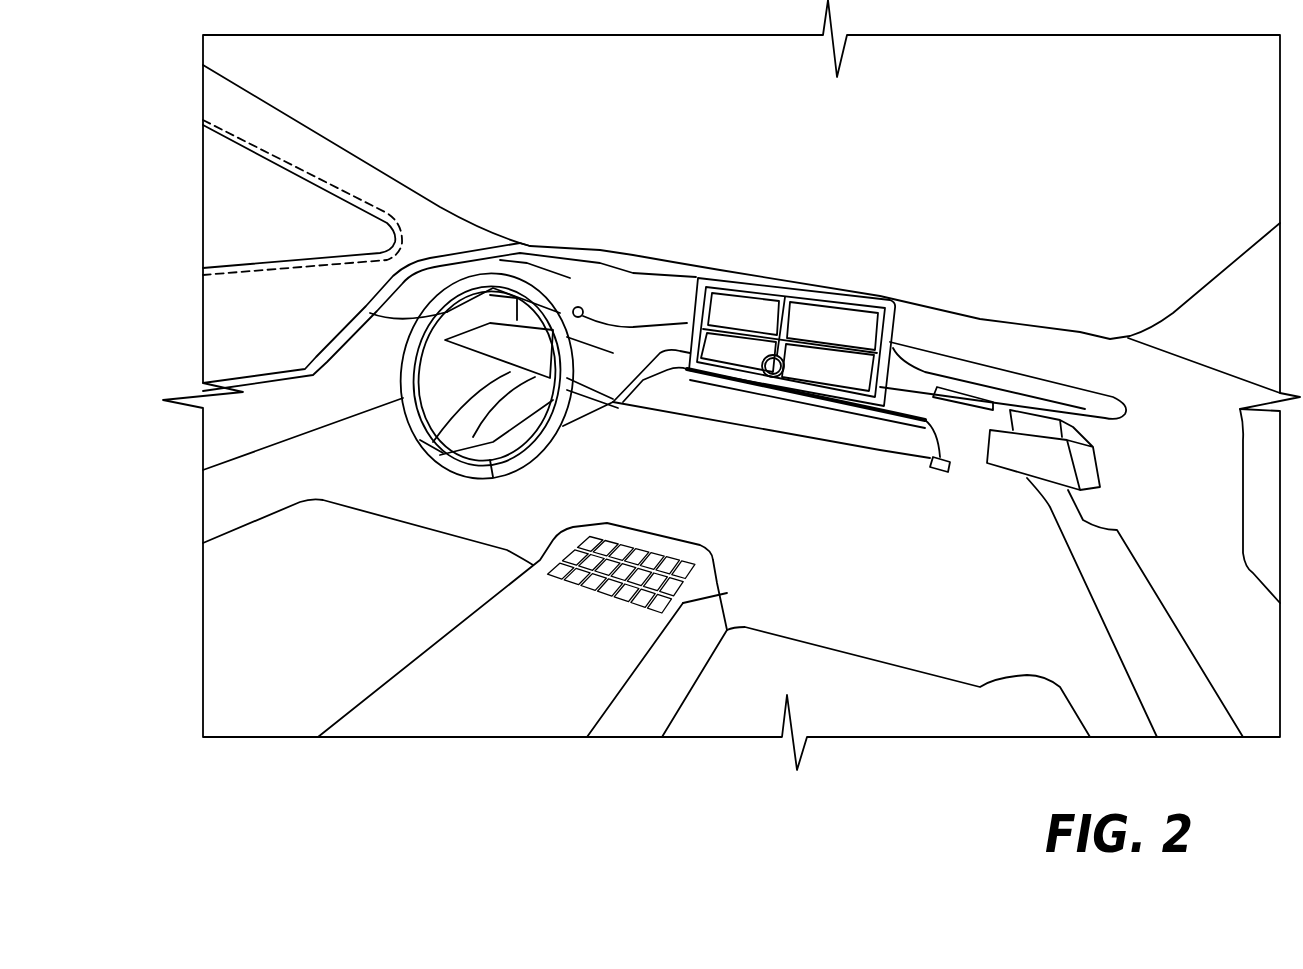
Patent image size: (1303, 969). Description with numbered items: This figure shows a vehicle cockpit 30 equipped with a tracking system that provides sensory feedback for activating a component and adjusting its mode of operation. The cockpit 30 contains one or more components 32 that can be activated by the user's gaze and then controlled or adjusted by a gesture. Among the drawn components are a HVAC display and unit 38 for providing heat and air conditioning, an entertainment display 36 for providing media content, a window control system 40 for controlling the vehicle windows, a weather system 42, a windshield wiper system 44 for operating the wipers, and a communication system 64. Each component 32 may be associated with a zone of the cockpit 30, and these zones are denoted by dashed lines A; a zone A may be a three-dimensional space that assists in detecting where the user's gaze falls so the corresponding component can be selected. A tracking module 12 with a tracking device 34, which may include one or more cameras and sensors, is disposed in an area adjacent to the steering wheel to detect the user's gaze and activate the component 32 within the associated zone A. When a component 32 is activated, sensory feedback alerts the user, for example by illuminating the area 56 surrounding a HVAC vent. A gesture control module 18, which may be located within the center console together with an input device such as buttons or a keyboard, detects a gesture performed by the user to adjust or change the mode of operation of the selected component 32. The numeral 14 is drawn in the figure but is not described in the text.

The vehicle cockpit 30 is at (368, 89).
The window control system 40 is at (274, 222).
The zone A is at (380, 215).
The tracking module 12 is at (572, 278).
The windshield wiper system 44 is at (663, 228).
The tracking device 34 is at (583, 309).
The entertainment display 36 is at (818, 380).
The weather system 42 is at (839, 318).
The communication system 64 is at (752, 297).
The center console 14 is at (623, 353).
The component 32 is at (942, 272).
The area surrounding the HVAC vent 56 is at (727, 593).
The gesture control module 18 is at (593, 515).
The HVAC display and unit 38 is at (650, 540).